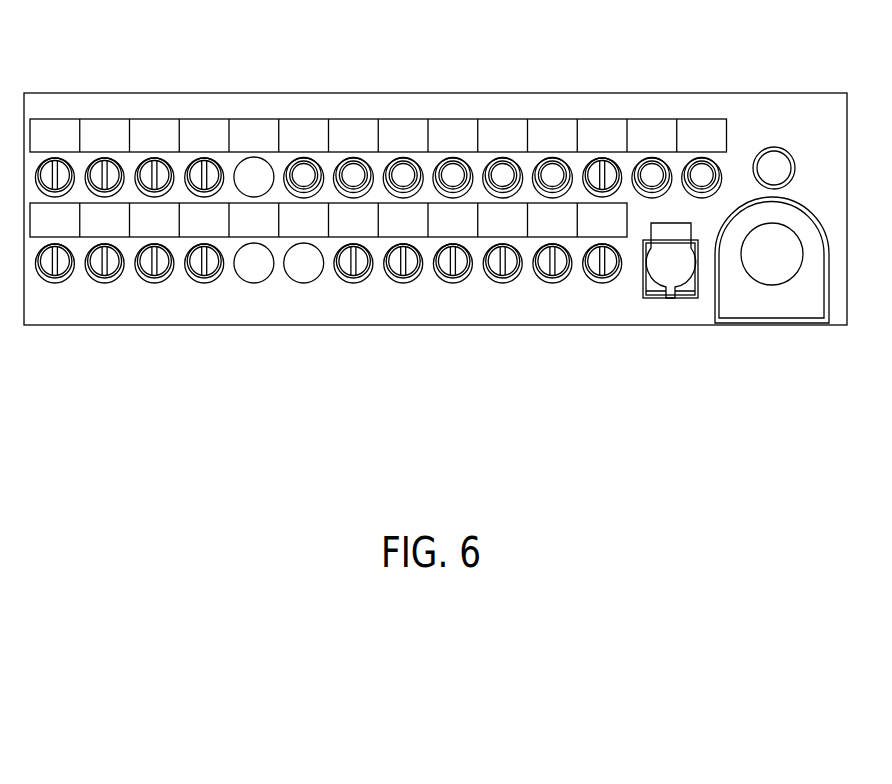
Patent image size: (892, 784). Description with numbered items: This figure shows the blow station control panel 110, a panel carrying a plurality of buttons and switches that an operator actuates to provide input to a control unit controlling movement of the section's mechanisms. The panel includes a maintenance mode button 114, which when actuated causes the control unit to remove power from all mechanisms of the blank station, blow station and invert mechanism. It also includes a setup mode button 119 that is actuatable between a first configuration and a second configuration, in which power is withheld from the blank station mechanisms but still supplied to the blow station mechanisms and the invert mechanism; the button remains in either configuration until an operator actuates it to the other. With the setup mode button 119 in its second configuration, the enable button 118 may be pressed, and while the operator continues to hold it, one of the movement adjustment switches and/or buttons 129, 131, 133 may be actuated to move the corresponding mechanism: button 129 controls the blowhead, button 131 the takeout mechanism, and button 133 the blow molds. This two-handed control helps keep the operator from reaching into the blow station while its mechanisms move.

The blow station control panel 110 is at (776, 108).
The maintenance mode button 114 is at (767, 262).
The enable button 118 is at (702, 170).
The setup mode button 119 is at (603, 172).
The movement adjustment switch and/or button 129 is at (158, 267).
The movement adjustment switch and/or button 131 is at (408, 265).
The movement adjustment switch and/or button 133 is at (47, 267).